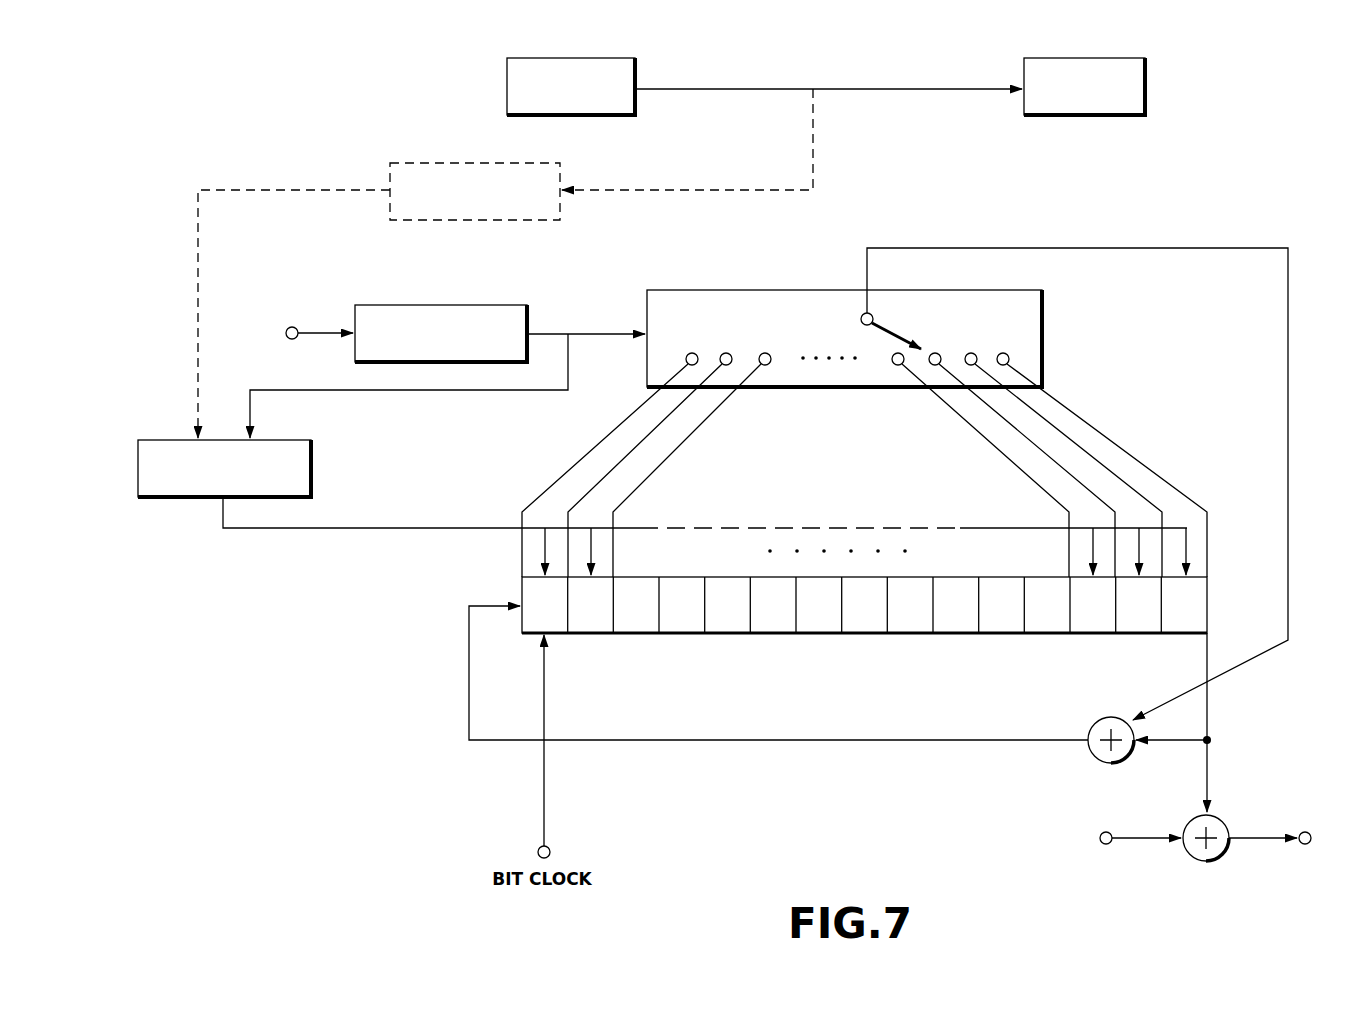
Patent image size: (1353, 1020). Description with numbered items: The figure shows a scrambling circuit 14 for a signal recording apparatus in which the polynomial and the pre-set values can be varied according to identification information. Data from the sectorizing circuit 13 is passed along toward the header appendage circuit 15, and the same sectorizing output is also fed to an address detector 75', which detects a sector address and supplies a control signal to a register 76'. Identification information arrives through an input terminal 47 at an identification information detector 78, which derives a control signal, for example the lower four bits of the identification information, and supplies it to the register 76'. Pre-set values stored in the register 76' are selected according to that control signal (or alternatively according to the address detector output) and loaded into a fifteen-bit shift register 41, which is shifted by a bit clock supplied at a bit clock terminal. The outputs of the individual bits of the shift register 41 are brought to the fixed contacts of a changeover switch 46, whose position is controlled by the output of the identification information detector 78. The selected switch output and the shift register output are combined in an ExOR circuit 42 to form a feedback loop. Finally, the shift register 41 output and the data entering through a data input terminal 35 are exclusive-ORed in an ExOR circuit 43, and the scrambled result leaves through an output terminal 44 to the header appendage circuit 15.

The sectorizing circuit 13 is at (507, 89).
The header appendage circuit 15 is at (1093, 113).
The address detector 75' is at (514, 177).
The input terminal 47 is at (292, 327).
The identification information detector 78 is at (397, 305).
The register 76' is at (255, 457).
The changeover switch 46 is at (745, 304).
The scrambling circuit 14 is at (1142, 240).
The shift register 41 is at (1208, 605).
The ExOR circuit 42 is at (1094, 721).
The ExOR circuit 43 is at (1220, 852).
The data input terminal 35 is at (1100, 833).
The output terminal 44 is at (1309, 832).